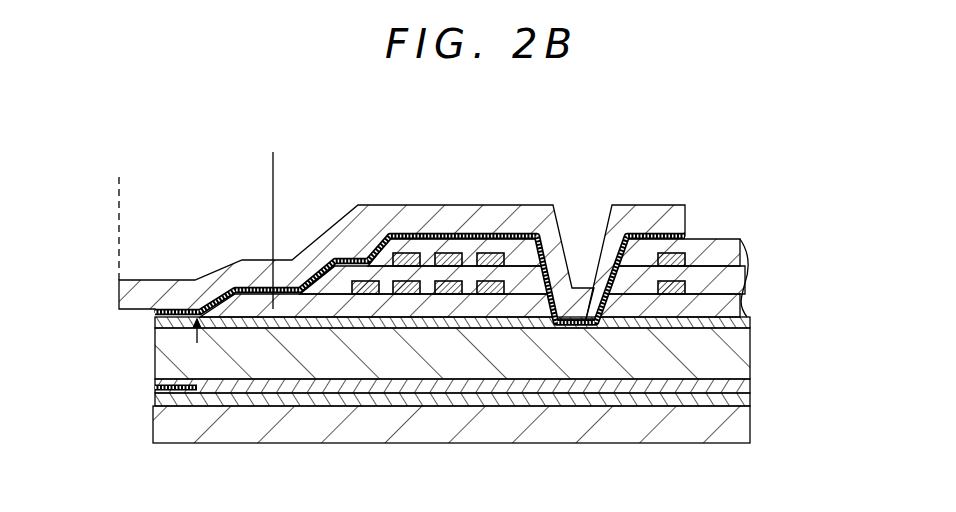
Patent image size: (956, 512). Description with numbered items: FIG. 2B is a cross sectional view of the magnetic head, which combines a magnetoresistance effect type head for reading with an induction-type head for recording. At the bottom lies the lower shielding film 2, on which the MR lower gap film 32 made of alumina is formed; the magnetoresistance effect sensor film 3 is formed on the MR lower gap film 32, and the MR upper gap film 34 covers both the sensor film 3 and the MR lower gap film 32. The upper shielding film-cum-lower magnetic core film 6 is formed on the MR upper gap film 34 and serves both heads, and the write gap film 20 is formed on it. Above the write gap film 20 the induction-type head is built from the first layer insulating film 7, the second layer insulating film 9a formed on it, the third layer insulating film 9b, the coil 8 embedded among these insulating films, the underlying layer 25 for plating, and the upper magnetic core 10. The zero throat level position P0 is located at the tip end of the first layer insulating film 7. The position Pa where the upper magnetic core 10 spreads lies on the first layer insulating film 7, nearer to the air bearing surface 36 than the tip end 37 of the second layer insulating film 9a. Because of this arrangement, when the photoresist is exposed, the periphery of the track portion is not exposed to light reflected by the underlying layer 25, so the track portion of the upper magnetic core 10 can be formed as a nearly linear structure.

The lower shielding film 2 is at (745, 434).
The magnetoresistance effect sensor film 3 is at (155, 388).
The upper shielding film-cum-lower magnetic core film 6 is at (740, 353).
The first layer insulating film 7 is at (238, 288).
The coil 8 is at (708, 242).
The second layer insulating film 9a is at (745, 288).
The third layer insulating film 9b is at (745, 256).
The upper magnetic core 10 is at (455, 206).
The write gap film 20 is at (745, 322).
The underlying layer for plating 25 is at (700, 220).
The MR lower gap film 32 is at (740, 400).
The MR upper gap film 34 is at (745, 386).
The air bearing surface 36 is at (121, 195).
The tip end of the second layer insulating film 37 is at (314, 296).
The position where the upper magnetic core spreads Pa is at (274, 216).
The zero throat level position P0 is at (216, 345).